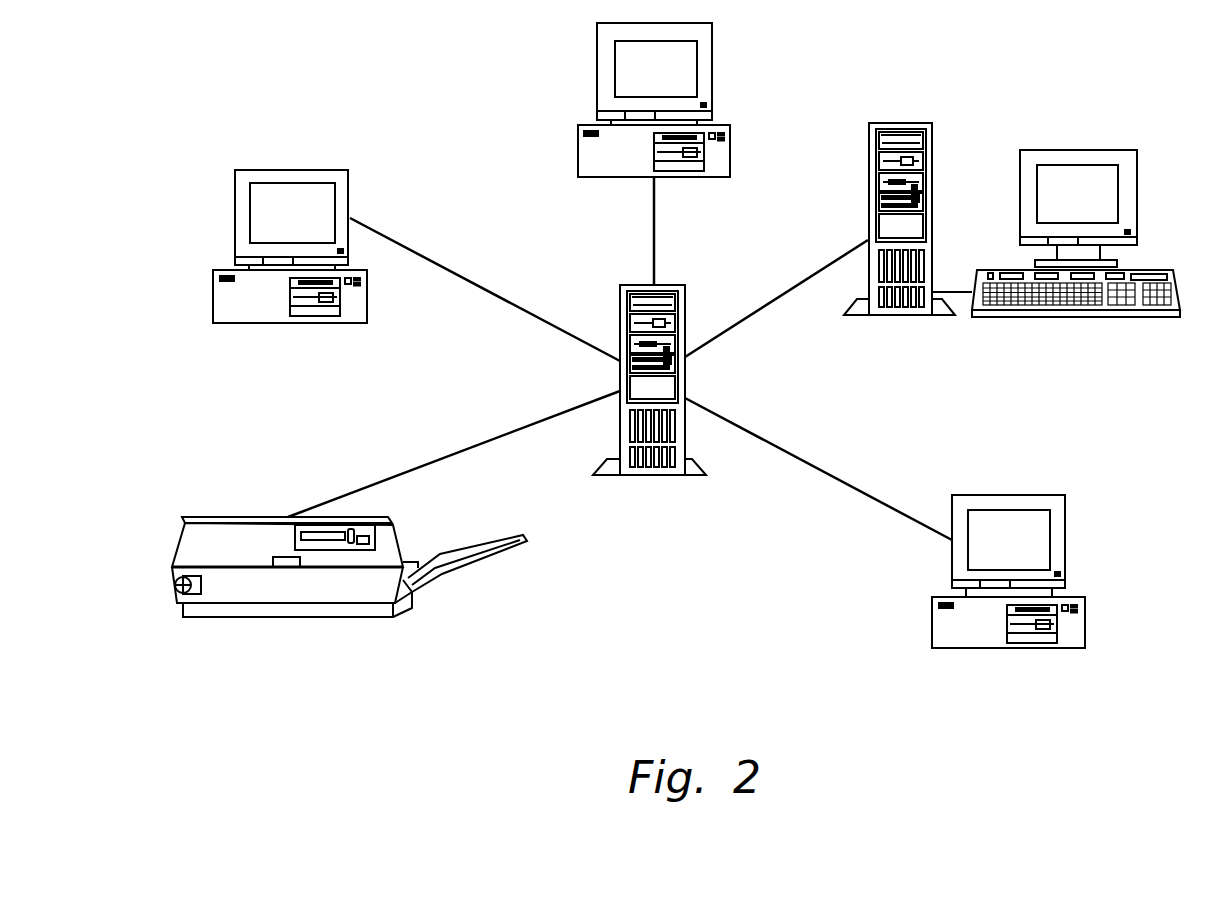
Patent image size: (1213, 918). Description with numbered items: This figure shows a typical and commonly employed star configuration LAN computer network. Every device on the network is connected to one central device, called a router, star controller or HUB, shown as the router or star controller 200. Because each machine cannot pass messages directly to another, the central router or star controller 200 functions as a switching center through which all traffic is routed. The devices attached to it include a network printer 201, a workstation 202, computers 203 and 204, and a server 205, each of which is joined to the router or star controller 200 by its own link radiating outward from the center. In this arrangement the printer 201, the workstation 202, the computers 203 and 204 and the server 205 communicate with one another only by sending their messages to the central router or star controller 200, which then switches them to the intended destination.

The router or star controller 200 is at (685, 298).
The printer 201 is at (220, 517).
The workstation 202 is at (348, 190).
The computer 203 is at (712, 42).
The computer 204 is at (1065, 516).
The server 205 is at (932, 143).